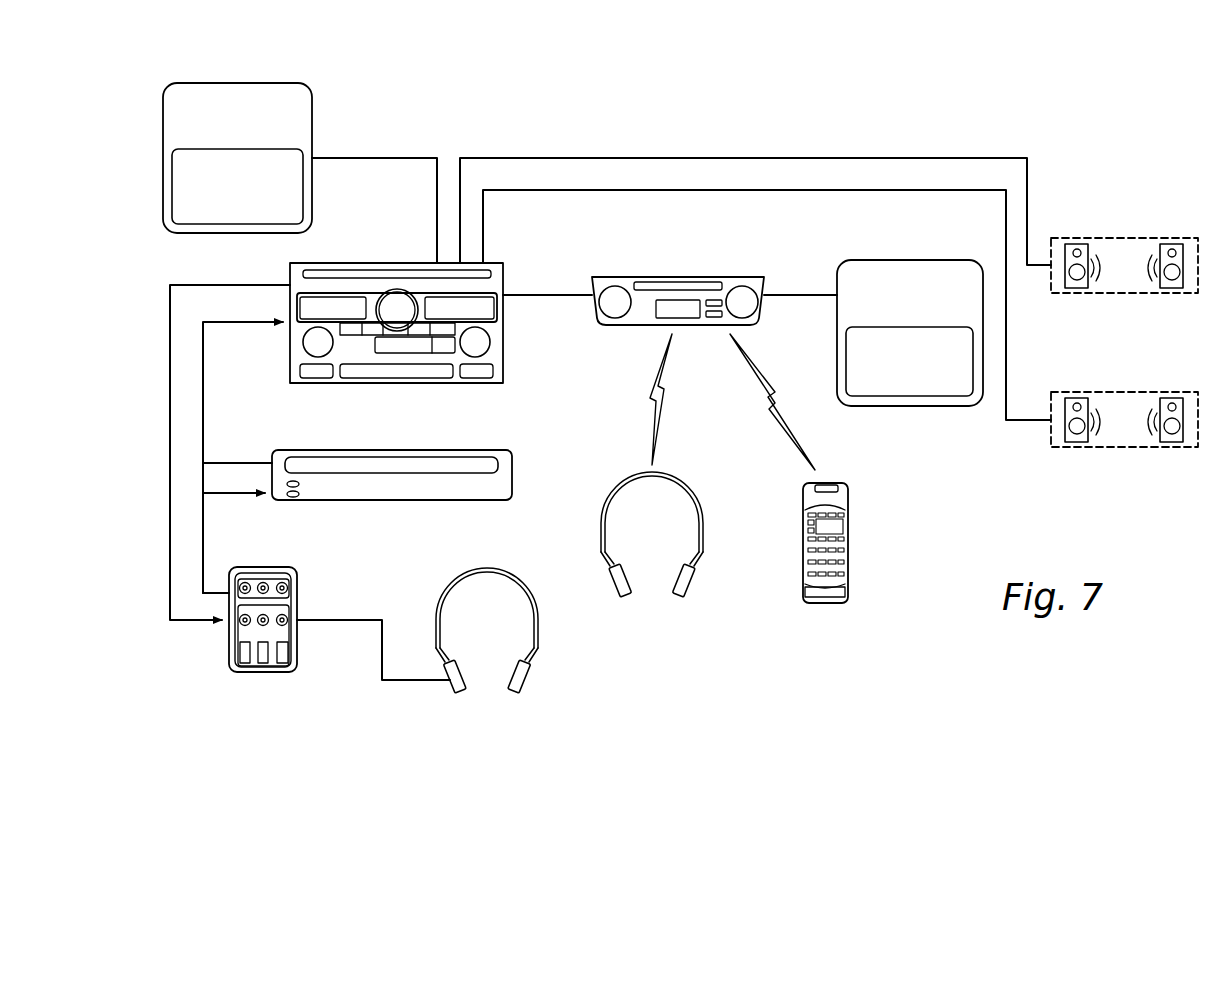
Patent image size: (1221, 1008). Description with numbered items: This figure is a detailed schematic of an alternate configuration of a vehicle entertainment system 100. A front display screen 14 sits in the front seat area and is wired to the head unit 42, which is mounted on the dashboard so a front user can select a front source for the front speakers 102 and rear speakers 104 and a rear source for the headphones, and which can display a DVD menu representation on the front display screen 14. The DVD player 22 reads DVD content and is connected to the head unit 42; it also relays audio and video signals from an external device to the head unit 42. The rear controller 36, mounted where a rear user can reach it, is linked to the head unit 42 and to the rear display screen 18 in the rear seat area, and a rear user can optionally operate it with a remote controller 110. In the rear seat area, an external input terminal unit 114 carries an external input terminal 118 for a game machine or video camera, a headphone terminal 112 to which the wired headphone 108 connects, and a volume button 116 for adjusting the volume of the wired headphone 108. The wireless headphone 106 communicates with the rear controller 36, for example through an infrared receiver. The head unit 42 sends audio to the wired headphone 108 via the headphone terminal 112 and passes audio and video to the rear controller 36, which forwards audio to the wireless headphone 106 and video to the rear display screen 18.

The entertainment system 100 is at (874, 121).
The front display screen 14 is at (312, 127).
The head unit 42 is at (465, 385).
The rear controller 36 is at (640, 326).
The rear display screen 18 is at (900, 408).
The front speakers 102 is at (1122, 238).
The rear speakers 104 is at (1122, 392).
The DVD player 22 is at (395, 501).
The external input terminal unit 114 is at (229, 641).
The external input terminal 118 is at (290, 583).
The headphone terminal 112 is at (287, 618).
The volume button 116 is at (286, 650).
The wired headphone 108 is at (497, 570).
The wireless headphone 106 is at (691, 498).
The remote controller 110 is at (848, 557).